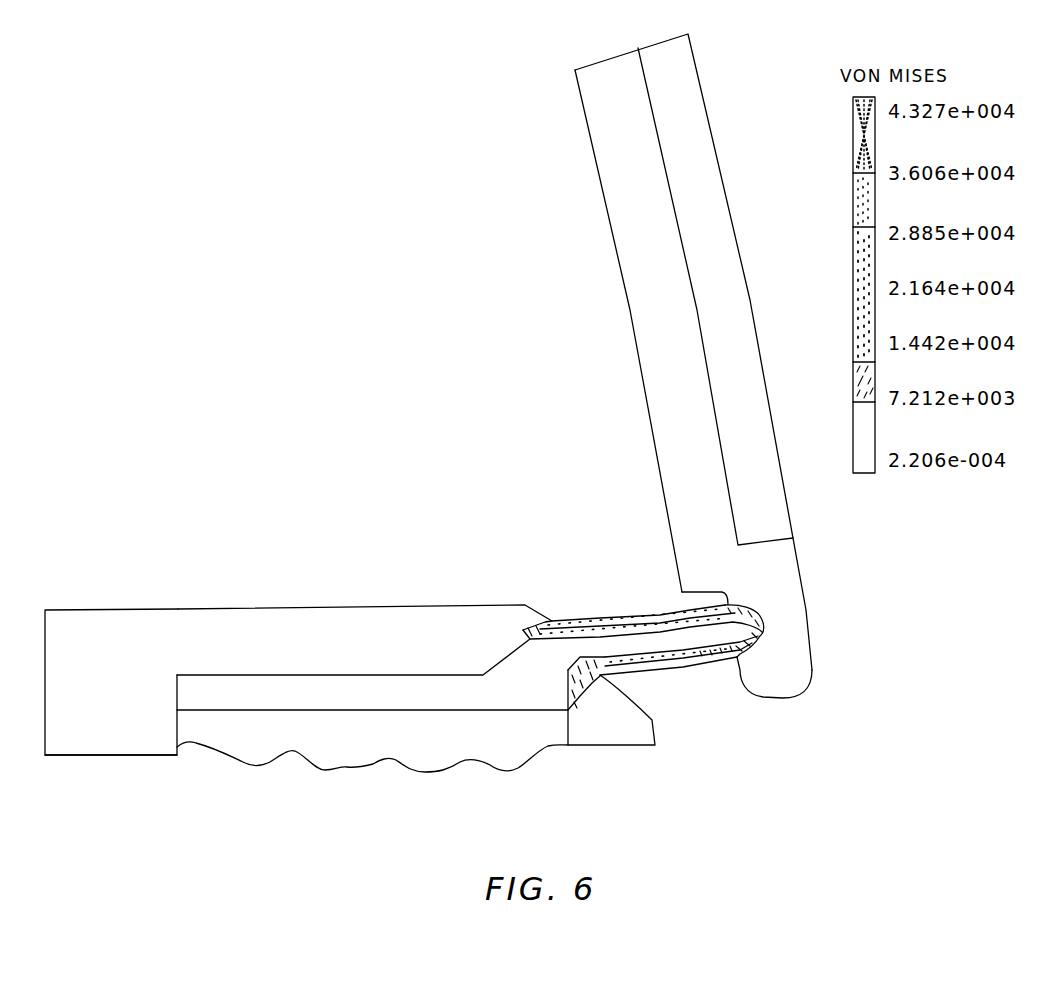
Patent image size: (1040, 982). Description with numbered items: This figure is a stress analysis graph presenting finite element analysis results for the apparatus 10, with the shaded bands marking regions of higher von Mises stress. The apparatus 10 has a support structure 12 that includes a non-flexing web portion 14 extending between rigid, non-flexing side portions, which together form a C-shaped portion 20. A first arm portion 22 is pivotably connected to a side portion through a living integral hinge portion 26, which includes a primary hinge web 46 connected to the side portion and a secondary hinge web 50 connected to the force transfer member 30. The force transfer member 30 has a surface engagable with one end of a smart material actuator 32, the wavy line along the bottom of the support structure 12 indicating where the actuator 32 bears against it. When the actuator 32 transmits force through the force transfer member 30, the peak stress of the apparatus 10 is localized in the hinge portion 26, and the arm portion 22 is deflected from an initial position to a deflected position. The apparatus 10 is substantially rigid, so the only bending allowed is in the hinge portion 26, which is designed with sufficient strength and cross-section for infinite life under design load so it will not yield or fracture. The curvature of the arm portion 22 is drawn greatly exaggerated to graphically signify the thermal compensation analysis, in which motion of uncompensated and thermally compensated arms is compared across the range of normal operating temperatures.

The apparatus 10 is at (308, 313).
The support structure 12 is at (263, 610).
The non-flexing web portion 14 is at (77, 755).
The C-shaped portion 20 is at (108, 610).
The first arm portion 22 is at (593, 157).
The living integral hinge portion 26 is at (603, 520).
The force transfer member 30 is at (595, 745).
The smart material actuator 32 is at (323, 778).
The primary hinge web 46 is at (583, 618).
The secondary hinge web 50 is at (685, 668).